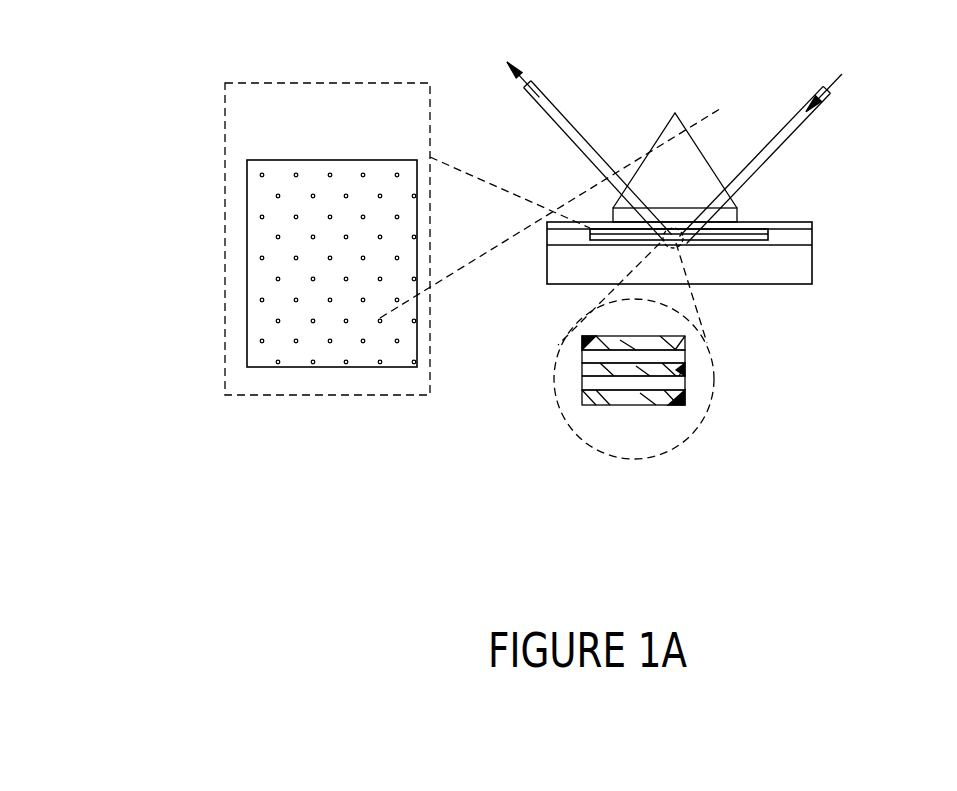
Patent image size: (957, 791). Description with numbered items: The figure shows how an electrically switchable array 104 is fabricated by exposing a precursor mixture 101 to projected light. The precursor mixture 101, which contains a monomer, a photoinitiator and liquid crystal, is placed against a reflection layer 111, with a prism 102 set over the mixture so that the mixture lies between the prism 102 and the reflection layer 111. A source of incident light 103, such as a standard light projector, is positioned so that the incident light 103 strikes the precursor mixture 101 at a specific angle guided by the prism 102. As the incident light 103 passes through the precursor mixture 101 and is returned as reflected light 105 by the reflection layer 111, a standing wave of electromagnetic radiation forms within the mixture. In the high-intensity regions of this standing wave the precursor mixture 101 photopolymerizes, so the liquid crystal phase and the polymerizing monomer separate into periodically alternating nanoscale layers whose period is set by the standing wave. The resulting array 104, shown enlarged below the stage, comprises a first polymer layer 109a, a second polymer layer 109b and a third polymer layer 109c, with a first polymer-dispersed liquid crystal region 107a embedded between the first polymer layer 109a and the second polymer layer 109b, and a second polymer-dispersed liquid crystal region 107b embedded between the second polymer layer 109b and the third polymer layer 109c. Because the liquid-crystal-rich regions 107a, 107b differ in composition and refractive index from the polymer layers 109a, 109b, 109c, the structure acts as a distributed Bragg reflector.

The precursor mixture 101 is at (247, 268).
The prism 102 is at (672, 133).
The incident light 103 is at (777, 141).
The electrically switchable array 104 is at (690, 433).
The reflected light 105 is at (572, 130).
The first polymer-dispersed liquid crystal region 107a is at (582, 355).
The second polymer-dispersed liquid crystal region 107b is at (582, 382).
The first polymer layer 109a is at (685, 342).
The second polymer layer 109b is at (685, 369).
The third polymer layer 109c is at (685, 397).
The reflection layer 111 is at (812, 265).